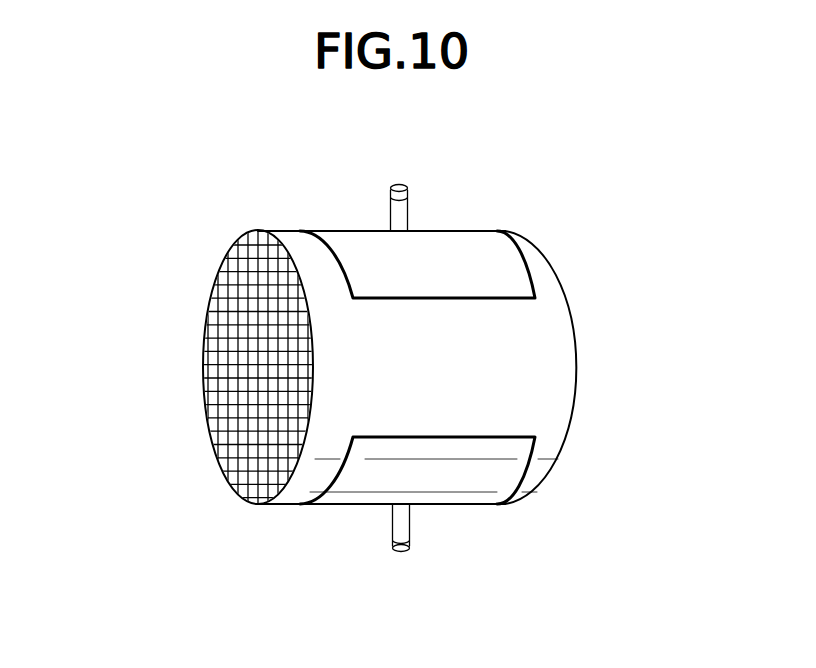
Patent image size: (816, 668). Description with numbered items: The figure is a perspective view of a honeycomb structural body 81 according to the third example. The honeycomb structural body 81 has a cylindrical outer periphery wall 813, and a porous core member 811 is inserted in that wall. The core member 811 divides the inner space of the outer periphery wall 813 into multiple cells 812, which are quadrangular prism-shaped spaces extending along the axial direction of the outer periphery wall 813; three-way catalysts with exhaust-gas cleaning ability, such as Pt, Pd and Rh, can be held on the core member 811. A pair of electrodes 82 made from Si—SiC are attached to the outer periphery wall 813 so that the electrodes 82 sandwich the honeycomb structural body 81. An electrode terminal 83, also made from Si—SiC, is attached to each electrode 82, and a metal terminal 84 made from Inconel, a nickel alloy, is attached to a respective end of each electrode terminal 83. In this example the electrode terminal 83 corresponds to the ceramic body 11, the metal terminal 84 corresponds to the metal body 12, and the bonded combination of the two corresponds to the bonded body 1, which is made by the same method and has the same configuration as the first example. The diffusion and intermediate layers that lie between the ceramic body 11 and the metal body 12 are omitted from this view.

The honeycomb structural body 81 is at (638, 231).
The electrode 82 is at (362, 250).
The core member 811 is at (227, 355).
The cell 812 is at (232, 308).
The outer periphery wall 813 is at (538, 377).
The electrode terminal 83 is at (495, 366).
The metal terminal 84 is at (495, 365).
The ceramic body 11 is at (402, 213).
The metal body 12 is at (400, 184).
The bonded body 1 is at (603, 128).